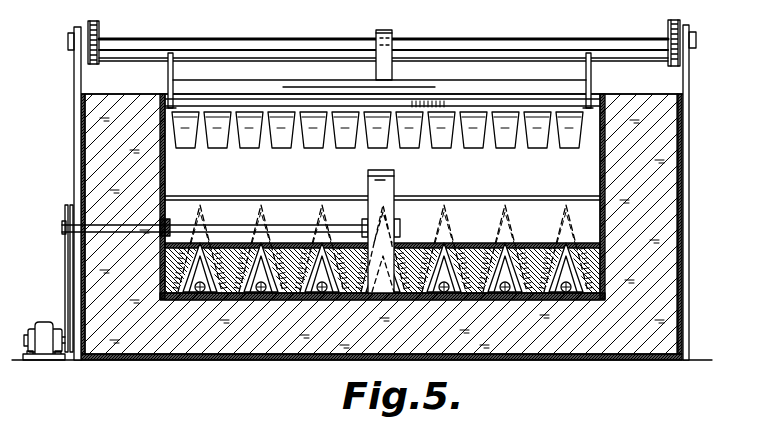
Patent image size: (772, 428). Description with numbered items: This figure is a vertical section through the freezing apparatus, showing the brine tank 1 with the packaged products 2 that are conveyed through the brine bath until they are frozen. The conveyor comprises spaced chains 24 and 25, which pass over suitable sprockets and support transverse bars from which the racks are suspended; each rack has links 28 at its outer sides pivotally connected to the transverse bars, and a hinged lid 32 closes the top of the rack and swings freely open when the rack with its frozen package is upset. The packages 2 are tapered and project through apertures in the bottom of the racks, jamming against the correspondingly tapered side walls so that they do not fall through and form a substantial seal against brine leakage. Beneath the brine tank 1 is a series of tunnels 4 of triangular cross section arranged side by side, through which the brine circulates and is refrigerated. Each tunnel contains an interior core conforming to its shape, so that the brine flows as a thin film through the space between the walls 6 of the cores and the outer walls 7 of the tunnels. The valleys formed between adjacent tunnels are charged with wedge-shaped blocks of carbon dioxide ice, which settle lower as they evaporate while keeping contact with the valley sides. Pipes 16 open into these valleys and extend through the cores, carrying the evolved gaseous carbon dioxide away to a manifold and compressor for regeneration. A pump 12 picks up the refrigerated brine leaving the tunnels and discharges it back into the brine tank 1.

The brine tank 1 is at (578, 176).
The packaged products 2 is at (330, 148).
The tunnels 4 is at (503, 220).
The walls of the cores 6 is at (187, 313).
The outer walls of the tunnels 7 is at (154, 265).
The pump 12 is at (394, 182).
The pipes 16 is at (181, 299).
The chain 24 is at (86, 22).
The chain 25 is at (680, 21).
The links 28 is at (168, 71).
The hinged lid 32 is at (290, 69).